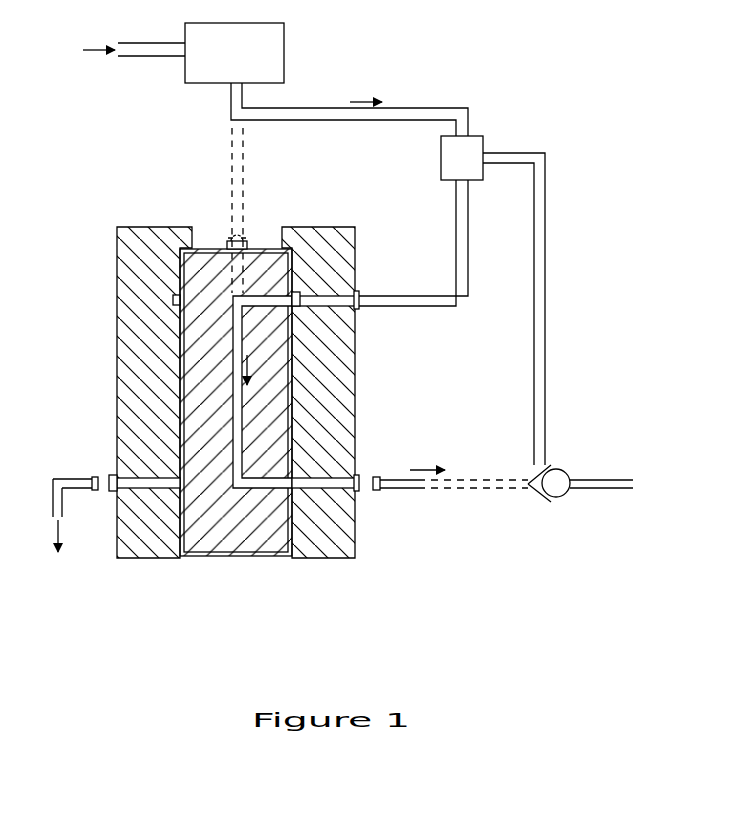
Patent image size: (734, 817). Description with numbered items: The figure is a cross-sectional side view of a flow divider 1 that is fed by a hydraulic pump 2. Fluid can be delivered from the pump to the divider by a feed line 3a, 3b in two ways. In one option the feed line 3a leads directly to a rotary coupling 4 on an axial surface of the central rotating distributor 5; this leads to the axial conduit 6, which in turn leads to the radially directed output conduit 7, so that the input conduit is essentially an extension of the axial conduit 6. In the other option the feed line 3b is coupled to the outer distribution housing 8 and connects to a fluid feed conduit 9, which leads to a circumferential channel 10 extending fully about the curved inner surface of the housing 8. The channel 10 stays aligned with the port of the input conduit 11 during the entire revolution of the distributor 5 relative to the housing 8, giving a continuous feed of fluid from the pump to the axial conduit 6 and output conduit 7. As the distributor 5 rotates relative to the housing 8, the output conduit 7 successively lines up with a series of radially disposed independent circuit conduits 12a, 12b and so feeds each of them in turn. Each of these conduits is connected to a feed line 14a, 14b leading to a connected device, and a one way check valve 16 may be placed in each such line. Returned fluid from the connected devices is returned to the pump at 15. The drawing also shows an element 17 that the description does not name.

The flow divider 1 is at (517, 81).
The hydraulic pump 2 is at (234, 53).
The feed line 3a is at (349, 114).
The feed line 3b is at (253, 210).
The rotary coupling 4 is at (243, 237).
The central rotating distributor 5 is at (236, 402).
The axial conduit 6 is at (240, 378).
The output conduit 7 is at (266, 485).
The outer distribution housing 8 is at (236, 392).
The fluid feed conduit 9 is at (355, 328).
The circumferential channel 10 is at (304, 294).
The input conduit 11 is at (297, 292).
The independent circuit conduit 12a is at (353, 508).
The independent circuit conduit 12b is at (153, 483).
The feed line 14a is at (450, 492).
The feed line 14b is at (53, 512).
The return 15 is at (134, 62).
The one way check valve 16 is at (580, 490).
The valve unit 17 is at (463, 158).